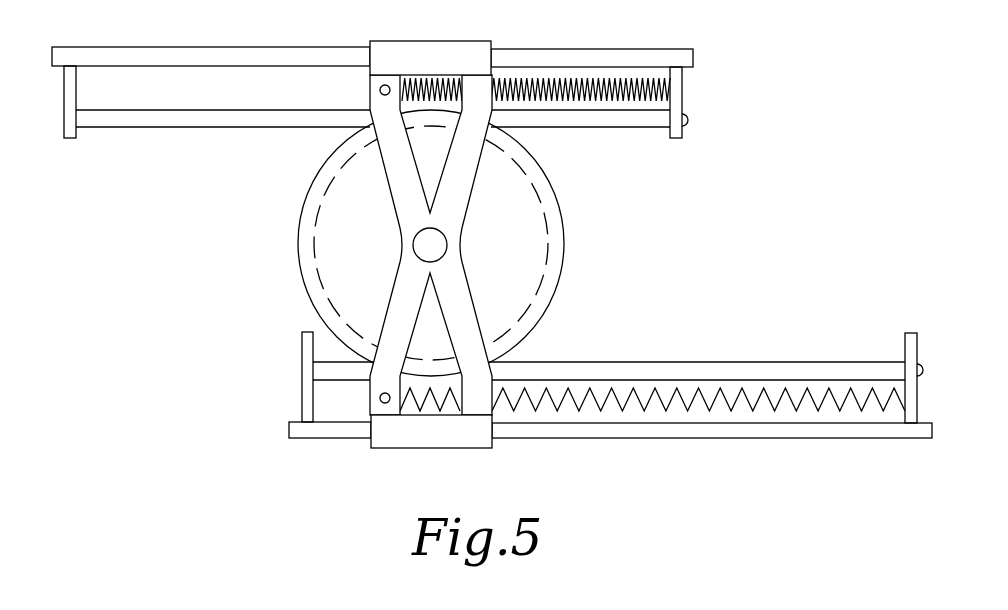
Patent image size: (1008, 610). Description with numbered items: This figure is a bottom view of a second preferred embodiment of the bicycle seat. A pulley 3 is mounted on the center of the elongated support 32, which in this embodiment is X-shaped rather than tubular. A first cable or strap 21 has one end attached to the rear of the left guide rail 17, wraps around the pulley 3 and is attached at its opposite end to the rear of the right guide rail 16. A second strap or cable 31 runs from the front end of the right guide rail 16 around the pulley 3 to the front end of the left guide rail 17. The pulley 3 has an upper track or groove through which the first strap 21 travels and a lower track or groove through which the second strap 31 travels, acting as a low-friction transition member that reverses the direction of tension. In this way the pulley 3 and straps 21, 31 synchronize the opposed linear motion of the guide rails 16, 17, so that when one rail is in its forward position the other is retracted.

The pulley 3 is at (558, 277).
The right guide rail 16 is at (593, 48).
The left guide rail 17 is at (798, 440).
The first cable or strap 21 is at (647, 128).
The second strap or cable 31 is at (140, 127).
The elongated support 32 is at (392, 197).